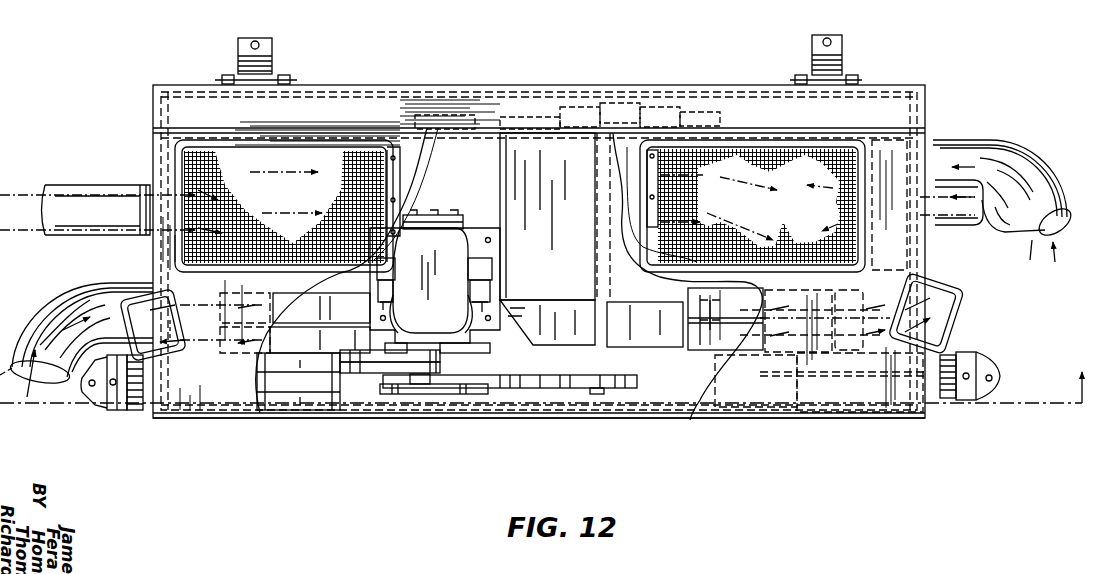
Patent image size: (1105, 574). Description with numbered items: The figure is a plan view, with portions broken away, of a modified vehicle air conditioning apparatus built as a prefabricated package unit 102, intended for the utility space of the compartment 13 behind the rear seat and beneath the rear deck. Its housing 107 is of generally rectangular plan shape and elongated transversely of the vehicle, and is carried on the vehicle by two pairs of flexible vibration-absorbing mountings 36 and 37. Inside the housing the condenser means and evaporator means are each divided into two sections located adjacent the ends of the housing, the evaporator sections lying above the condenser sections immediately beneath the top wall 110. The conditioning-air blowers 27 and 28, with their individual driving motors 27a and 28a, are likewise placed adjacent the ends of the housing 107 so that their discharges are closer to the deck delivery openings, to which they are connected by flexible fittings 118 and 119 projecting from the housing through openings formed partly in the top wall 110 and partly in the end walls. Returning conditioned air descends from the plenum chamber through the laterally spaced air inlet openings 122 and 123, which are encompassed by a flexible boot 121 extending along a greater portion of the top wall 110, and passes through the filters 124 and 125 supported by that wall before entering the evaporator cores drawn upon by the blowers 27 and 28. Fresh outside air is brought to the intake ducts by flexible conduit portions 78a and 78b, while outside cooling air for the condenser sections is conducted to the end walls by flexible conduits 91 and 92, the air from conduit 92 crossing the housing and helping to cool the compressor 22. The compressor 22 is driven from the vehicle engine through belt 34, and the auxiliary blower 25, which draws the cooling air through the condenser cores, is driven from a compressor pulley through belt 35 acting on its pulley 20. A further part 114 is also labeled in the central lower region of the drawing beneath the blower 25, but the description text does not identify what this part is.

The compartment 13 is at (548, 375).
The pulley 20 is at (625, 405).
The compressor 22 is at (470, 222).
The blower 25 is at (500, 163).
The blower 27 is at (283, 350).
The driving motor 27a is at (278, 412).
The blower 28 is at (703, 353).
The driving motor 28a is at (744, 420).
The belt 34 is at (375, 395).
The belt 35 is at (495, 398).
The flexible vibration-absorbing mountings 36 is at (955, 402).
The flexible vibration-absorbing mountings 37 is at (843, 62).
The flexible conduit portion 78a is at (946, 228).
The flexible conduit portion 78b is at (80, 175).
The flexible conduit 91 is at (993, 144).
The flexible conduit 92 is at (82, 294).
The prefabricated package unit 102 is at (617, 86).
The housing 107 is at (492, 105).
The top wall 110 is at (826, 413).
The deflector plate 114 is at (548, 342).
The flexible conduit or fitting 118 is at (952, 328).
The flexible conduit or fitting 119 is at (160, 366).
The flexible conduit or boot 121 is at (177, 160).
The air inlet opening 122 is at (218, 152).
The air inlet opening 123 is at (820, 148).
The filter 124 is at (345, 168).
The filter 125 is at (713, 160).